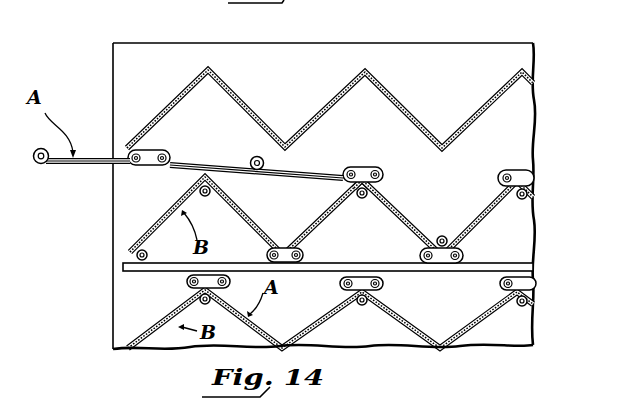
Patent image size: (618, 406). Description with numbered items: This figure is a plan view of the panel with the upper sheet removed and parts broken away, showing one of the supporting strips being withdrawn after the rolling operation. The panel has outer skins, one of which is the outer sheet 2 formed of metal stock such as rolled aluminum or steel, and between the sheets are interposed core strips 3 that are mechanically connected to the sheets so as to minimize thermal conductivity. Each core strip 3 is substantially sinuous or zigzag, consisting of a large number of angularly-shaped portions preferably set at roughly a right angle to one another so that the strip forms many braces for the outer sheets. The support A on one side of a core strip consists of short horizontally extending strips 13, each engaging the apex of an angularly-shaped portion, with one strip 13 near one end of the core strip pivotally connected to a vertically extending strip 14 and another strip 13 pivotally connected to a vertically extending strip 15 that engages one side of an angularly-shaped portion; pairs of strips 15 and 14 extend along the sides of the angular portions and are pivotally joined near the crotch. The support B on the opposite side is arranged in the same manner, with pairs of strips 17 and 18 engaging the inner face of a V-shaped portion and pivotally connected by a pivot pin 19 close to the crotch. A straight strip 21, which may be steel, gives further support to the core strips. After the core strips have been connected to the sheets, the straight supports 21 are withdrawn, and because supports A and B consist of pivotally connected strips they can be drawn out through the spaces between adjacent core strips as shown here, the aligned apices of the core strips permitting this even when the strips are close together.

The outer sheet 2 is at (148, 48).
The core strip 3 is at (330, 209).
The short horizontally extending strip 13 is at (153, 149).
The vertically extending strip 14 is at (90, 167).
The vertically extending strip 15 is at (207, 162).
The strip 17 is at (336, 219).
The strip 18 is at (401, 224).
The pivot pin 19 is at (363, 199).
The straight support strip 21 is at (485, 267).